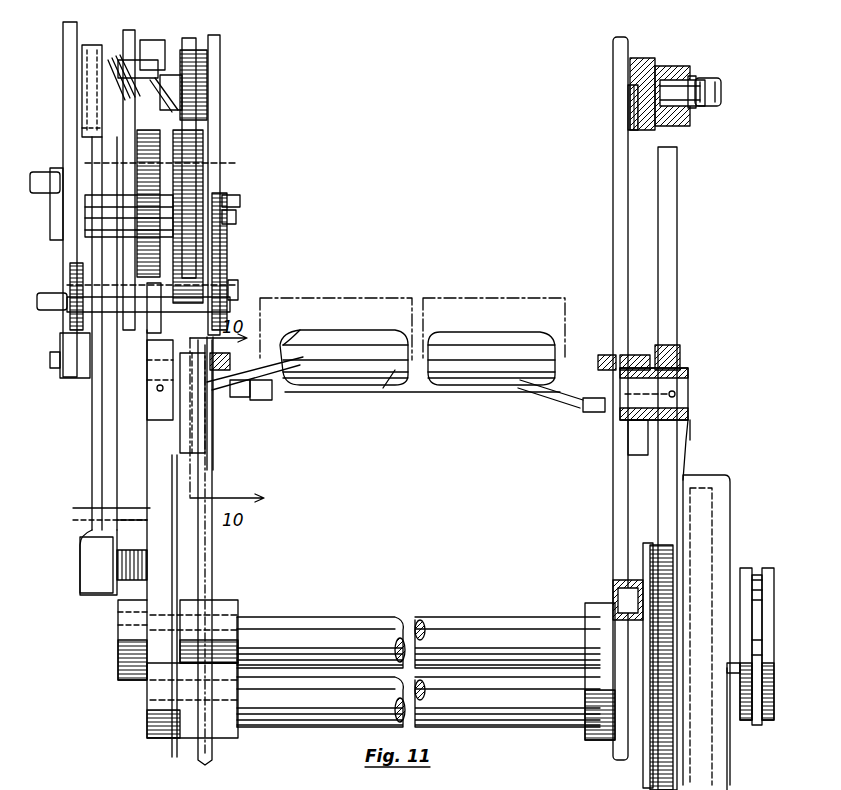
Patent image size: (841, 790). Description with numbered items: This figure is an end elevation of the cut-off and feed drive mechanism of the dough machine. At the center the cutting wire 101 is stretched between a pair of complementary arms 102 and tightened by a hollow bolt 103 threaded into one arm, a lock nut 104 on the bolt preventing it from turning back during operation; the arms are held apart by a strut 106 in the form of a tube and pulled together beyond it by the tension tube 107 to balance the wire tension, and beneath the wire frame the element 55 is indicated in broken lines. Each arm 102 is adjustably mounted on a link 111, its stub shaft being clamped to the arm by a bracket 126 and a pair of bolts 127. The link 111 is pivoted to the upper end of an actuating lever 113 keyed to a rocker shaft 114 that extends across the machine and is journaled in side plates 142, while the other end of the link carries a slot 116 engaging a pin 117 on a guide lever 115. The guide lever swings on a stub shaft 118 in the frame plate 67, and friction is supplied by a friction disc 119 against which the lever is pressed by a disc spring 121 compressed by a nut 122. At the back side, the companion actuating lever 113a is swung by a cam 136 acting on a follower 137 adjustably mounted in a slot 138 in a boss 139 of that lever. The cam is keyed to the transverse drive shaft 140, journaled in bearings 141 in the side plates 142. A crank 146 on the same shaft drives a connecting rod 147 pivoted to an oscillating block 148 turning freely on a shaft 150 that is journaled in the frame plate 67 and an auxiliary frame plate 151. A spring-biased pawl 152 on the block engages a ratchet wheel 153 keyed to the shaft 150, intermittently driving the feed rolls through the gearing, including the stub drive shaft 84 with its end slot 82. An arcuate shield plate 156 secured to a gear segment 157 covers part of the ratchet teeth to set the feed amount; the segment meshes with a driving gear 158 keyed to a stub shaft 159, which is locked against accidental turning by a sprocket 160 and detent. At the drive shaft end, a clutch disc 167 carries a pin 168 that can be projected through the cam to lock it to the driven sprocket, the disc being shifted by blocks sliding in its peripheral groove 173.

The card 55 is at (285, 385).
The frame plate 67 is at (220, 72).
The slot 82 is at (240, 214).
The stub drive shaft 84 is at (240, 202).
The wire 101 is at (408, 427).
The arms 102 is at (280, 400).
The hollow bolt 103 is at (230, 397).
The lock nut 104 is at (250, 370).
The strut 106 is at (487, 357).
The tube 107 is at (368, 332).
The link 111 is at (212, 478).
The actuating lever 113 is at (150, 508).
The actuating lever 113a is at (670, 447).
The rocker shaft 114 is at (283, 723).
The guide lever 115 is at (667, 276).
The slot 116 is at (675, 370).
The pin 117 is at (200, 423).
The stub shaft 118 is at (118, 97).
The friction disc 119 is at (196, 52).
The disc spring 121 is at (195, 82).
The nut 122 is at (717, 110).
The bracket 126 is at (215, 397).
The bolts 127 is at (607, 363).
The cam 136 is at (730, 487).
The follower 137 is at (693, 583).
The slot 138 is at (647, 577).
The boss 139 is at (637, 637).
The drive shaft 140 is at (360, 627).
The bearings 141 is at (227, 607).
The side plates 142 is at (208, 543).
The crank 146 is at (128, 605).
The connecting rod 147 is at (100, 460).
The oscillating block 148 is at (87, 110).
The shaft 150 is at (43, 197).
The auxiliary frame plate 151 is at (72, 137).
The pawl 152 is at (160, 46).
The ratchet wheel 153 is at (150, 285).
The shield plate 156 is at (205, 130).
The gear segment 157 is at (228, 245).
The driving gear 158 is at (157, 338).
The stub shaft 159 is at (240, 290).
The sprocket 160 is at (80, 282).
The clutch disc 167 is at (760, 712).
The pin 168 is at (727, 667).
The groove 173 is at (755, 567).